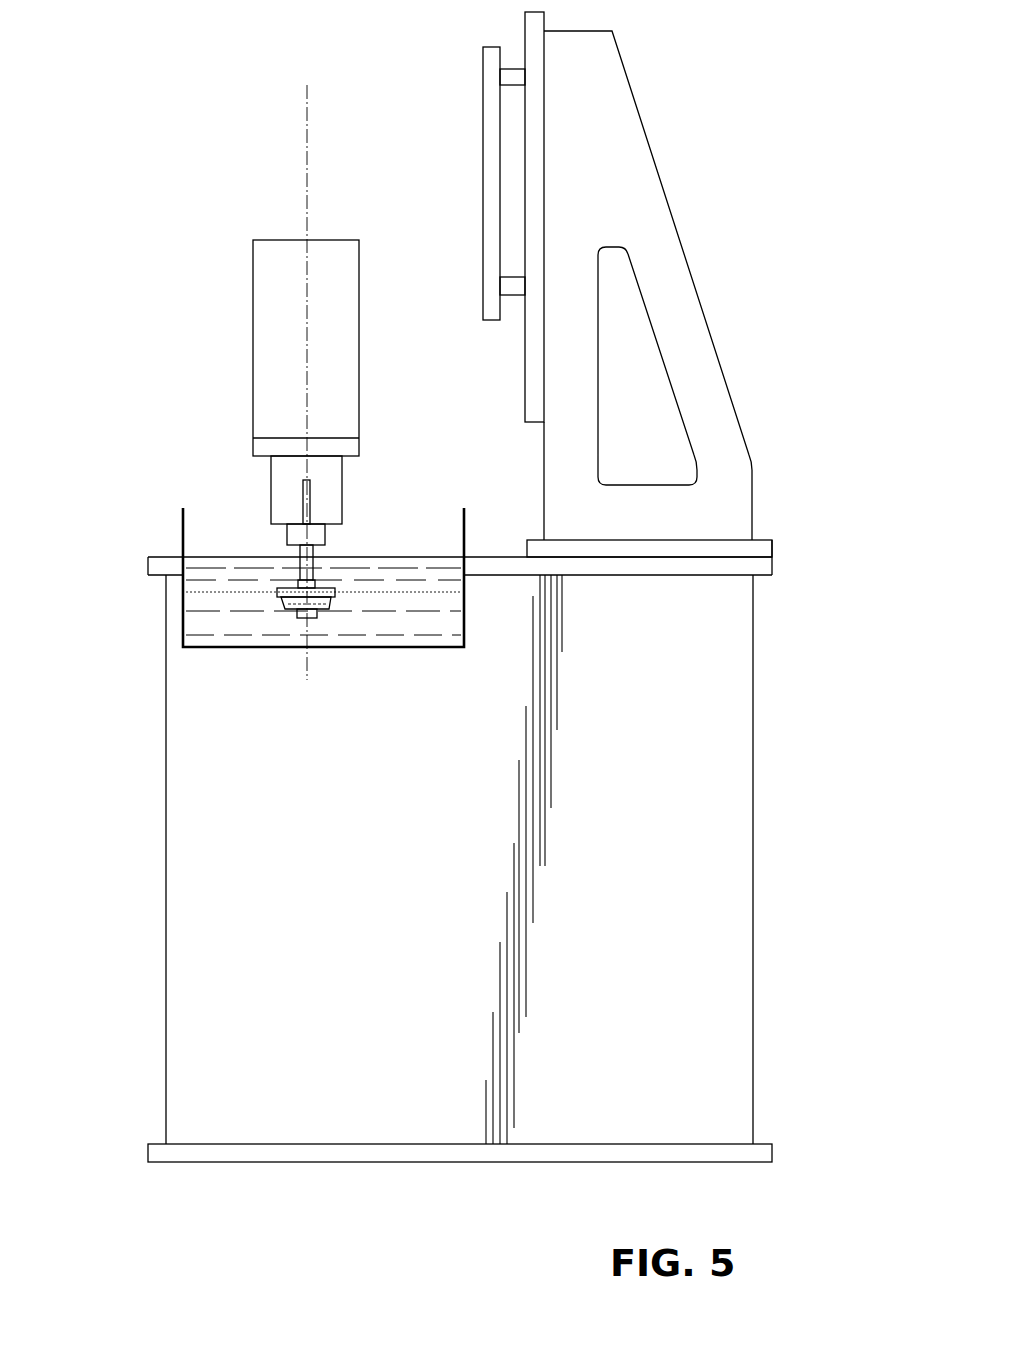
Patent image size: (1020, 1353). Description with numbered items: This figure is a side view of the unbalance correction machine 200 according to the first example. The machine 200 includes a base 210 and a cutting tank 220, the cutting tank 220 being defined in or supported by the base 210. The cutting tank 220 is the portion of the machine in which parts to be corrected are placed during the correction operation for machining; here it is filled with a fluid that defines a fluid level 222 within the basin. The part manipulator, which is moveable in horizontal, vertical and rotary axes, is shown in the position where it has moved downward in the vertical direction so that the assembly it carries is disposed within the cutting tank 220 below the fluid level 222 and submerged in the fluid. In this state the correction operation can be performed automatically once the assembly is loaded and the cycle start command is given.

The unbalance correction machine 200 is at (178, 220).
The base 210 is at (166, 786).
The cutting tank 220 is at (183, 602).
The fluid level 222 is at (212, 561).